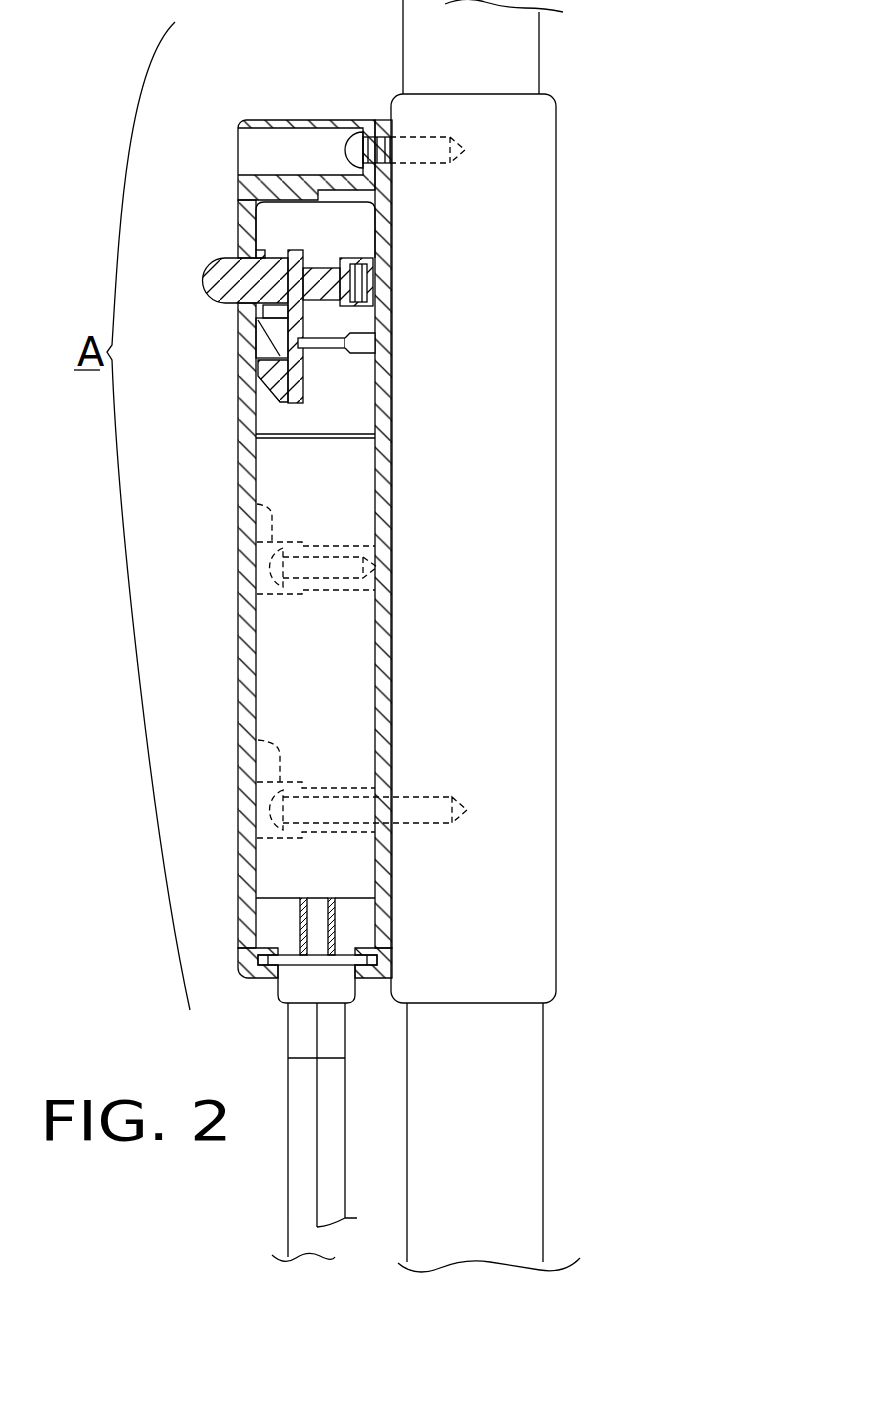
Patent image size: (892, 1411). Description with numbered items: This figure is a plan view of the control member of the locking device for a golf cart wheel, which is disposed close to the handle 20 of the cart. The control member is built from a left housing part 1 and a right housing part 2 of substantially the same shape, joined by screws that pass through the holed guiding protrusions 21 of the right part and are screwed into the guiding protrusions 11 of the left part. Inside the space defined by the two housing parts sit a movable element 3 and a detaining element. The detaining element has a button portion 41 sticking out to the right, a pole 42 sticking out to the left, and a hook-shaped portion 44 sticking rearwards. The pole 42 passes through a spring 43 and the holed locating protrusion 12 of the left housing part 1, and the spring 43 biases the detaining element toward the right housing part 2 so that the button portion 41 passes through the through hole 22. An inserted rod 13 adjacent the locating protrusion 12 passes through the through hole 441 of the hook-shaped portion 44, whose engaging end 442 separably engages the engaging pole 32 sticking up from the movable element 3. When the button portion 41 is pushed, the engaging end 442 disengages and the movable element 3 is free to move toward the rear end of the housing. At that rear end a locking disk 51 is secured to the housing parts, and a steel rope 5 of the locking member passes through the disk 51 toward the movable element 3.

The left housing part 1 is at (388, 675).
The right housing part 2 is at (250, 658).
The movable element 3 is at (323, 490).
The steel rope 5 is at (300, 912).
The guiding protrusions 11 is at (347, 547).
The locating protrusion 12 is at (362, 258).
The inserted rod 13 is at (326, 350).
The handle 20 is at (557, 402).
The holed guiding protrusions 21 is at (255, 502).
The through hole 22 is at (237, 215).
The engaging pole 32 is at (268, 347).
The button portion 41 is at (218, 260).
The pole 42 is at (384, 255).
The spring 43 is at (308, 262).
The hook-shaped portion 44 is at (376, 326).
The locking disk 51 is at (295, 980).
The through hole 441 is at (277, 318).
The engaging end 442 is at (262, 382).